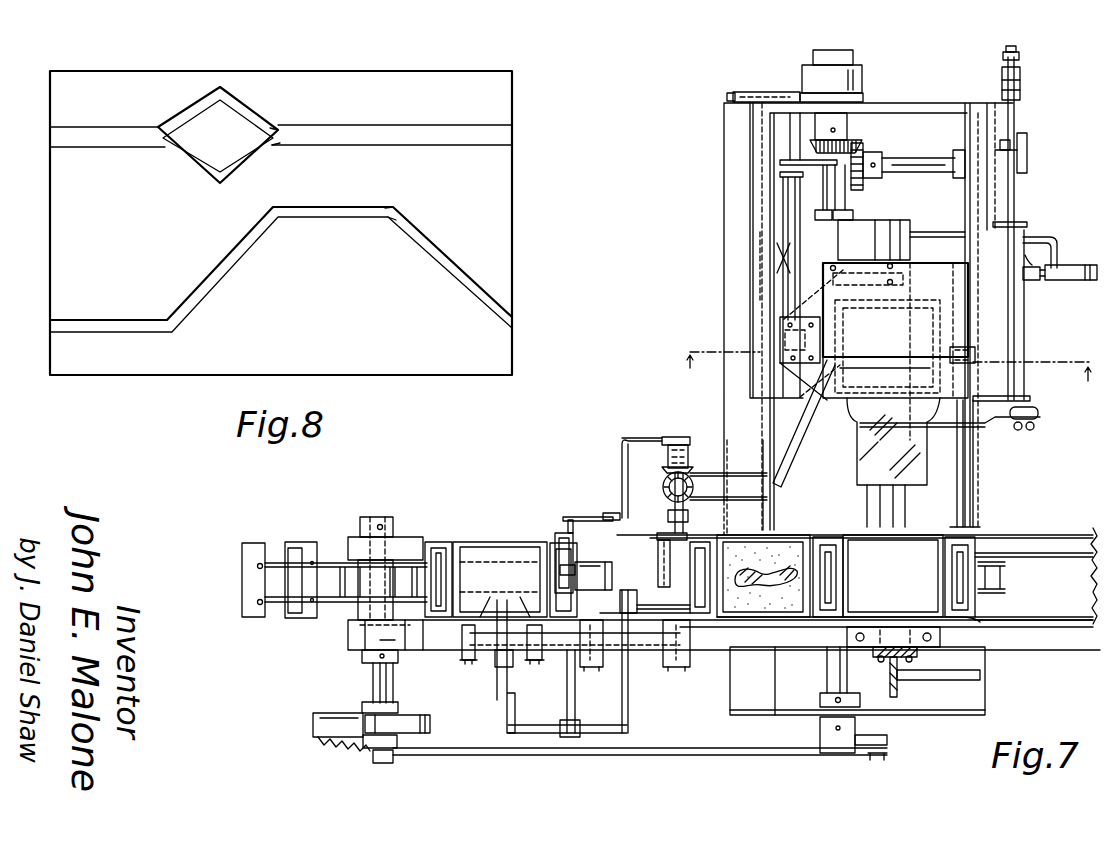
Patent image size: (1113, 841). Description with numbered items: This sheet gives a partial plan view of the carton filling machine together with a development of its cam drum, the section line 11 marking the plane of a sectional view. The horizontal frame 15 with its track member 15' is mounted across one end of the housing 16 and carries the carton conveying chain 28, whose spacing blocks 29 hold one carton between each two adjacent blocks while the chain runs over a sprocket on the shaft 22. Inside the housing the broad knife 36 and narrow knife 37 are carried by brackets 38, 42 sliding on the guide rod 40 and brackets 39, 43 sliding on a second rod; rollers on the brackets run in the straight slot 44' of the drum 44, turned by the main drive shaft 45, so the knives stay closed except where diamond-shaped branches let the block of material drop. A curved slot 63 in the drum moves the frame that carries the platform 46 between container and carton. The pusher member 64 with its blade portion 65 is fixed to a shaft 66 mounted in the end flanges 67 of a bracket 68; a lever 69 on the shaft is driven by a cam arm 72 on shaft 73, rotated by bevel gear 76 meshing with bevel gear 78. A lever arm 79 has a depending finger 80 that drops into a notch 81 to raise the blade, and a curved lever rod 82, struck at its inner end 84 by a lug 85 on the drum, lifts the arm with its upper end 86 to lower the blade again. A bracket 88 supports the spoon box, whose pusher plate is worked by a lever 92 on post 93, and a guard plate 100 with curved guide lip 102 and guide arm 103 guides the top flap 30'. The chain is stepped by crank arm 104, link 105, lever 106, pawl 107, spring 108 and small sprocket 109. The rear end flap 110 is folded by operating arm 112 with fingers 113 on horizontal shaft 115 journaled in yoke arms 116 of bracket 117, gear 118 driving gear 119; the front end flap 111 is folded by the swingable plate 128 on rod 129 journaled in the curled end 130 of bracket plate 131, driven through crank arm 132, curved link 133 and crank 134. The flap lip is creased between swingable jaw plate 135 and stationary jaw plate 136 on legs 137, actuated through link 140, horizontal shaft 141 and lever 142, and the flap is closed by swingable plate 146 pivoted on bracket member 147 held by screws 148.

In FIG. 7, the section line 11 is at (890, 352).
In FIG. 7, the horizontal frame 15 is at (1042, 662).
In FIG. 7, the track member 15' is at (1068, 596).
In FIG. 7, the housing 16 is at (733, 388).
In FIG. 7, the shaft 22 is at (373, 675).
In FIG. 7, the carton conveying chain 28 is at (318, 545).
In FIG. 7, the spacing blocks 29 is at (262, 545).
In FIG. 7, the top flap 30' is at (763, 589).
In FIG. 7, the broad knife 36 is at (895, 310).
In FIG. 7, the narrow knife 37 is at (895, 377).
In FIG. 7, the bracket 38 is at (808, 190).
In FIG. 7, the bracket 39 is at (972, 348).
In FIG. 7, the guide rod 40 is at (790, 138).
In FIG. 7, the bracket 42 is at (765, 284).
In FIG. 7, the bracket 43 is at (993, 355).
In FIG. 8, the drum 44 is at (281, 228).
In FIG. 7, the drum 44 is at (875, 226).
In FIG. 8, the straight slot 44' is at (350, 121).
In FIG. 7, the main drive shaft 45 is at (845, 197).
In FIG. 7, the platform 46 is at (875, 412).
In FIG. 8, the curved slot 63 is at (268, 228).
In FIG. 7, the curved slot 63 is at (800, 435).
In FIG. 7, the pusher member 64 is at (1022, 422).
In FIG. 7, the blade portion 65 is at (935, 430).
In FIG. 7, the shaft 66 is at (1017, 195).
In FIG. 7, the end flanges 67 is at (1032, 395).
In FIG. 7, the bracket 68 is at (1030, 342).
In FIG. 7, the lever 69 is at (1020, 80).
In FIG. 7, the cam arm 72 is at (1027, 150).
In FIG. 7, the shaft 73 is at (930, 160).
In FIG. 7, the bevel gear 76 is at (852, 142).
In FIG. 7, the bevel gear 78 is at (875, 156).
In FIG. 7, the lever arm 79 is at (1080, 283).
In FIG. 7, the depending finger 80 is at (1035, 283).
In FIG. 7, the notch 81 is at (1030, 262).
In FIG. 7, the curved lever rod 82 is at (1052, 237).
In FIG. 7, the inner end 84 is at (912, 233).
In FIG. 7, the lug 85 is at (760, 235).
In FIG. 7, the upper end 86 is at (1070, 267).
In FIG. 7, the bracket 88 is at (885, 665).
In FIG. 7, the lever 92 is at (897, 690).
In FIG. 7, the post 93 is at (940, 680).
In FIG. 7, the guard plate 100 is at (825, 620).
In FIG. 7, the curved guide lip 102 is at (975, 617).
In FIG. 7, the guide arm 103 is at (760, 620).
In FIG. 7, the crank arm 104 is at (875, 740).
In FIG. 7, the link 105 is at (712, 748).
In FIG. 7, the lever 106 is at (398, 742).
In FIG. 7, the pawl 107 is at (313, 728).
In FIG. 7, the spring 108 is at (344, 751).
In FIG. 7, the small sprocket 109 is at (430, 722).
In FIG. 7, the rear end flap 110 is at (658, 560).
In FIG. 7, the front end flap 111 is at (648, 577).
In FIG. 7, the operating arm 112 is at (660, 537).
In FIG. 7, the fingers 113 is at (658, 580).
In FIG. 7, the horizontal shaft 115 is at (668, 513).
In FIG. 7, the yoke arms 116 is at (688, 516).
In FIG. 7, the bracket 117 is at (702, 478).
In FIG. 7, the gear 118 is at (662, 469).
In FIG. 7, the gear 119 is at (663, 490).
In FIG. 7, the swingable plate 128 is at (593, 576).
In FIG. 7, the rod 129 is at (569, 520).
In FIG. 7, the curled end 130 is at (575, 575).
In FIG. 7, the bracket plate 131 is at (556, 540).
In FIG. 7, the crank arm 132 is at (602, 517).
In FIG. 7, the curved link 133 is at (622, 470).
In FIG. 7, the crank 134 is at (683, 445).
In FIG. 7, the swingable jaw plate 135 is at (668, 608).
In FIG. 7, the stationary jaw plate 136 is at (663, 642).
In FIG. 7, the legs 137 is at (690, 640).
In FIG. 7, the link 140 is at (628, 690).
In FIG. 7, the horizontal shaft 141 is at (597, 725).
In FIG. 7, the lever 142 is at (567, 703).
In FIG. 7, the swingable plate 146 is at (500, 579).
In FIG. 7, the bracket member 147 is at (462, 650).
In FIG. 7, the screws 148 is at (475, 665).